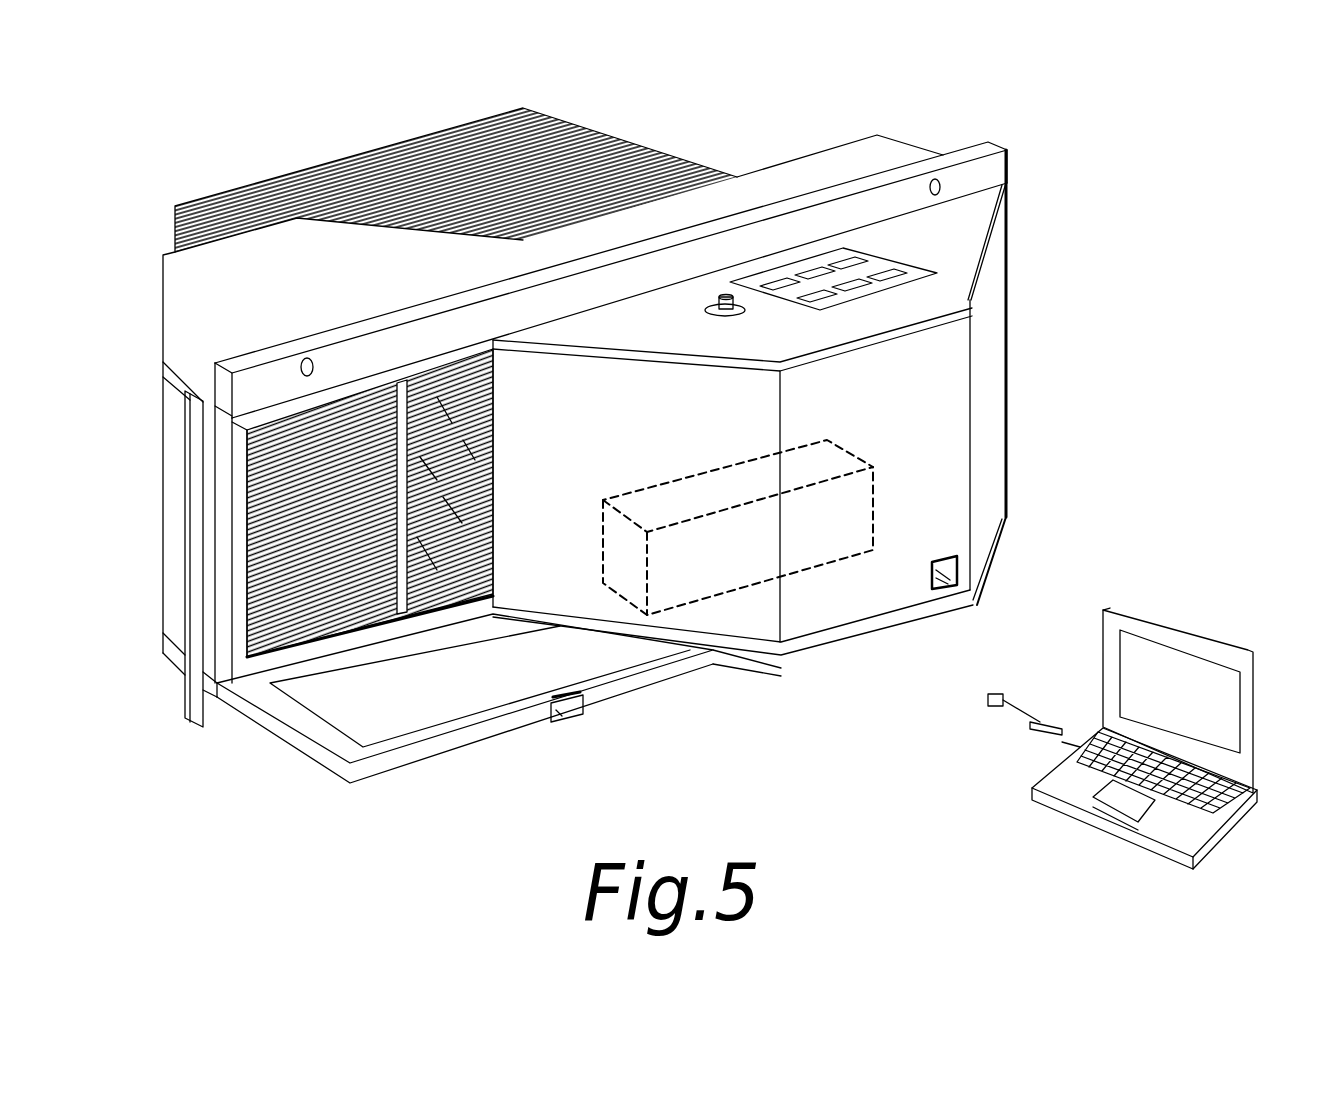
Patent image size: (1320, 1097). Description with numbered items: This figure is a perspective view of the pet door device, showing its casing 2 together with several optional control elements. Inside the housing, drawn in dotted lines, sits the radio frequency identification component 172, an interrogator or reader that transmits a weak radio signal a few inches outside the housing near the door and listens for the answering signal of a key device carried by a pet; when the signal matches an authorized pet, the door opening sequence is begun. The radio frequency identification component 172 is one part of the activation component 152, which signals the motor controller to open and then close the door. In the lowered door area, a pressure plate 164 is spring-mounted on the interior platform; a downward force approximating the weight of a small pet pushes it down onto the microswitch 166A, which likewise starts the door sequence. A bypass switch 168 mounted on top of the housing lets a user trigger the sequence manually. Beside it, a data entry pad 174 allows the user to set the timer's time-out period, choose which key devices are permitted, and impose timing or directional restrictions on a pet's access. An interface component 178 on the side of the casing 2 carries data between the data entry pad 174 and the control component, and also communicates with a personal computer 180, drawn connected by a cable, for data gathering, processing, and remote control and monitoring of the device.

The casing 2 is at (928, 133).
The activation component 152 is at (300, 781).
The pressure plate 164 is at (335, 705).
The microswitch 166A is at (556, 718).
The bypass switch 168 is at (723, 297).
The radio frequency identification component 172 is at (835, 545).
The data entry pad 174 is at (925, 270).
The interface component 178 is at (958, 567).
The computer 180 is at (1187, 623).